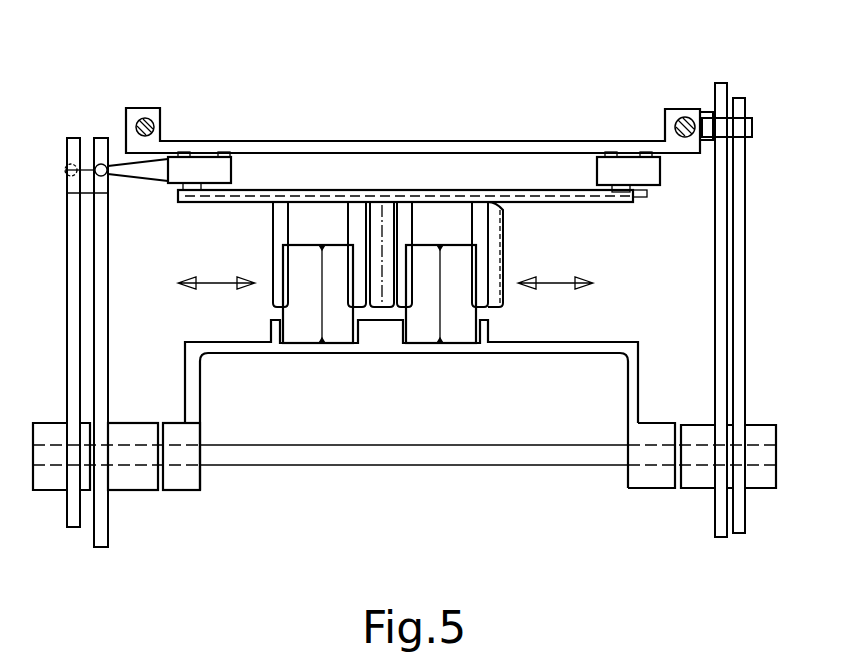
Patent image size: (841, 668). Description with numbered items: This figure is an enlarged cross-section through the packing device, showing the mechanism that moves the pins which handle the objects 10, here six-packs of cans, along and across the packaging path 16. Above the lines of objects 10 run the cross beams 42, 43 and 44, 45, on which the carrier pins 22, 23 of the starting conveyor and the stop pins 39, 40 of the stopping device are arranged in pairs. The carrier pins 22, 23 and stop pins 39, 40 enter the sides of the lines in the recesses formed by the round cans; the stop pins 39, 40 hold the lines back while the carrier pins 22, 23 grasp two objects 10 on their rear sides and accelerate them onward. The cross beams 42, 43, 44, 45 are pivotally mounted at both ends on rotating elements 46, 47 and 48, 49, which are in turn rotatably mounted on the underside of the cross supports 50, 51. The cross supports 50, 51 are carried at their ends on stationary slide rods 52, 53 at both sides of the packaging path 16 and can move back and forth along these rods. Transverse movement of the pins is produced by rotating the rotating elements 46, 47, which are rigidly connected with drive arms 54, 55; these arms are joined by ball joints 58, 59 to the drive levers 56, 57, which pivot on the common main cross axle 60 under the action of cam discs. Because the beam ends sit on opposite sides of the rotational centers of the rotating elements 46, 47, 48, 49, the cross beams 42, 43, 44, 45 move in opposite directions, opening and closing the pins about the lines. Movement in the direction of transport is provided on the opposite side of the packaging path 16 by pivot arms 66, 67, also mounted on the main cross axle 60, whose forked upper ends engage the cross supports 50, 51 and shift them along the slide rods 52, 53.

The objects 10 is at (316, 243).
The packaging path 16 is at (376, 364).
The carrier pin 22 is at (348, 207).
The carrier pin 23 is at (464, 200).
The stop pin 39 is at (278, 227).
The stop pin 40 is at (360, 210).
The cross beam 42 is at (436, 256).
The cross beam 43 is at (610, 202).
The cross beam 44 is at (436, 256).
The cross beam 45 is at (436, 256).
The rotating element 46 is at (225, 132).
The rotating element 47 is at (207, 165).
The rotating element 48 is at (624, 135).
The rotating element 49 is at (622, 167).
The cross support 50 is at (413, 113).
The cross support 51 is at (388, 148).
The slide rod 52 is at (147, 117).
The slide rod 53 is at (687, 115).
The drive arm 54 is at (145, 207).
The drive arm 55 is at (147, 176).
The drive lever 56 is at (72, 342).
The drive lever 57 is at (102, 292).
The ball joint 58 is at (99, 163).
The ball joint 59 is at (68, 166).
The main cross axle 60 is at (512, 455).
The pivot arm 66 is at (720, 262).
The pivot arm 67 is at (770, 330).